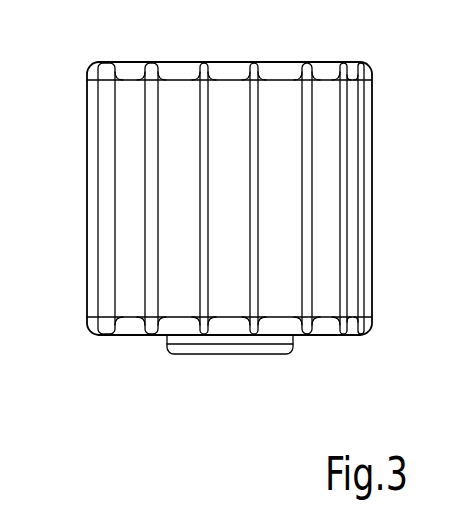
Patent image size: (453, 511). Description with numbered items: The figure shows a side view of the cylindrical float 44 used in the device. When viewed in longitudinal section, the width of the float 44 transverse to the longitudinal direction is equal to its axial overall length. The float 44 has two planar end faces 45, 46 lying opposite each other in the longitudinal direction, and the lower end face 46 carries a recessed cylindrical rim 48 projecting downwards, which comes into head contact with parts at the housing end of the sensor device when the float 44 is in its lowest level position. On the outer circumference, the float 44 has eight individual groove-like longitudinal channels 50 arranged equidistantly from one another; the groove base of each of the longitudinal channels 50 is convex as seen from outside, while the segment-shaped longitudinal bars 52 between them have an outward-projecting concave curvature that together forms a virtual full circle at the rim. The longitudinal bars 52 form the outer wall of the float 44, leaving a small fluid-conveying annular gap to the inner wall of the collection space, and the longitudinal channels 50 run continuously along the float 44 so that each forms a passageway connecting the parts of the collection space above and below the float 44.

The float 44 is at (270, 88).
The end face 45 is at (176, 61).
The lower end face 46 is at (138, 338).
The recessed cylindrical rim 48 is at (287, 355).
The longitudinal channels 50 is at (278, 197).
The longitudinal bars 52 is at (138, 135).